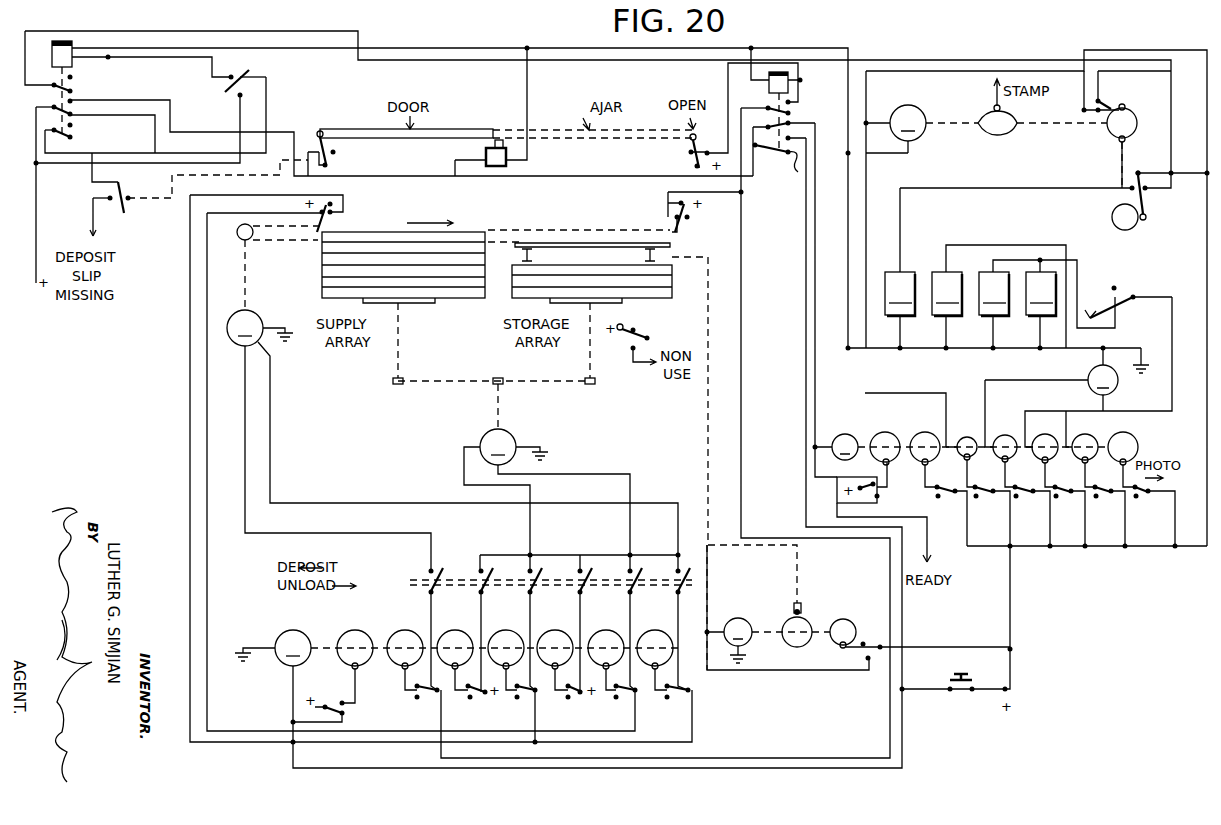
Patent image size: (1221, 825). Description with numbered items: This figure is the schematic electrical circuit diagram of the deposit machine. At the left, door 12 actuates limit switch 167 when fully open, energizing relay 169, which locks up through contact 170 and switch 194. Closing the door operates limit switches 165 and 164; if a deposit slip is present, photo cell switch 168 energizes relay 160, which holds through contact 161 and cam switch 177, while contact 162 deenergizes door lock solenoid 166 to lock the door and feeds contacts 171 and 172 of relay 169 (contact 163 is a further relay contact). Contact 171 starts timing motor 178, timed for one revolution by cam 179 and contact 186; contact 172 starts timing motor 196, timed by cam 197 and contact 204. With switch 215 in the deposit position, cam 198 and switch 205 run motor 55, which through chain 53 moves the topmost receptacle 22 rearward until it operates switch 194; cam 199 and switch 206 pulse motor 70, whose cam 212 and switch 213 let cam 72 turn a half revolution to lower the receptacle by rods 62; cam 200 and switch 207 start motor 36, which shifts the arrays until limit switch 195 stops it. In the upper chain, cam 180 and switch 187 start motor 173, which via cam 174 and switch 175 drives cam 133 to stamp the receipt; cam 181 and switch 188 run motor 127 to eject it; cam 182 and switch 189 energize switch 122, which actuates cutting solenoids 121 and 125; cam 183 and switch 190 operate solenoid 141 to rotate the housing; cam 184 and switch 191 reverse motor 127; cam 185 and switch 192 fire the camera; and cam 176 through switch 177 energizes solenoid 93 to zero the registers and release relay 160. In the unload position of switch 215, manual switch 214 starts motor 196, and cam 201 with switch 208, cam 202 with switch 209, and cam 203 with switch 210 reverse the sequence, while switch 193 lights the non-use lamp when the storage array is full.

The door 12 is at (482, 114).
The receptacle 22 is at (457, 283).
The motor 36 is at (512, 436).
The chain 53 is at (245, 241).
The motor 55 is at (250, 312).
The rods 62 is at (795, 603).
The motor 70 is at (733, 620).
The cam 72 is at (790, 640).
The solenoid 93 is at (900, 311).
The solenoid 121 is at (994, 311).
The switch 122 is at (1118, 294).
The solenoid 125 is at (1041, 304).
The motor 127 is at (1112, 390).
The cam 133 is at (1005, 128).
The solenoid 141 is at (947, 311).
The relay 160 is at (68, 40).
The contact 161 is at (72, 88).
The contact 162 is at (72, 108).
The relay contact 163 is at (72, 130).
The limit switch 164 is at (122, 205).
The limit switch 165 is at (327, 160).
The door lock solenoid 166 is at (486, 155).
The limit switch 167 is at (692, 160).
The photo cell switch 168 is at (226, 92).
The relay 169 is at (790, 92).
The contact 170 is at (790, 110).
The contact 171 is at (792, 128).
The contact 172 is at (776, 163).
The motor 173 is at (914, 138).
The cam 174 is at (1112, 129).
The switch 175 is at (1102, 103).
The cam 176 is at (1112, 216).
The cam switch 177 is at (1147, 180).
The timing motor 178 is at (838, 438).
The cam 179 is at (880, 434).
The cam 180 is at (918, 434).
The cam 181 is at (962, 438).
The cam 182 is at (1000, 436).
The cam 183 is at (1040, 435).
The cam 184 is at (1080, 435).
The cam 185 is at (1118, 433).
The contact 186 is at (878, 496).
The switch 187 is at (944, 496).
The switch 188 is at (982, 496).
The switch 189 is at (1022, 496).
The switch 190 is at (1062, 496).
The switch 191 is at (1102, 496).
The switch 192 is at (1142, 496).
The switch 193 is at (630, 345).
The switch 194 is at (681, 226).
The limit switch 195 is at (330, 216).
The timing motor 196 is at (293, 630).
The cam 197 is at (352, 632).
The cam 198 is at (402, 632).
The cam 199 is at (452, 632).
The cam 200 is at (503, 632).
The cam 201 is at (552, 632).
The cam 202 is at (603, 632).
The cam 203 is at (652, 632).
The contact 204 is at (345, 715).
The switch 205 is at (424, 696).
The switch 206 is at (476, 698).
The switch 207 is at (524, 696).
The switch 208 is at (574, 698).
The switch 209 is at (623, 696).
The switch 210 is at (674, 696).
The cam 212 is at (846, 620).
The switch 213 is at (864, 654).
The manually operable switch 214 is at (958, 695).
The switch 215 is at (418, 624).